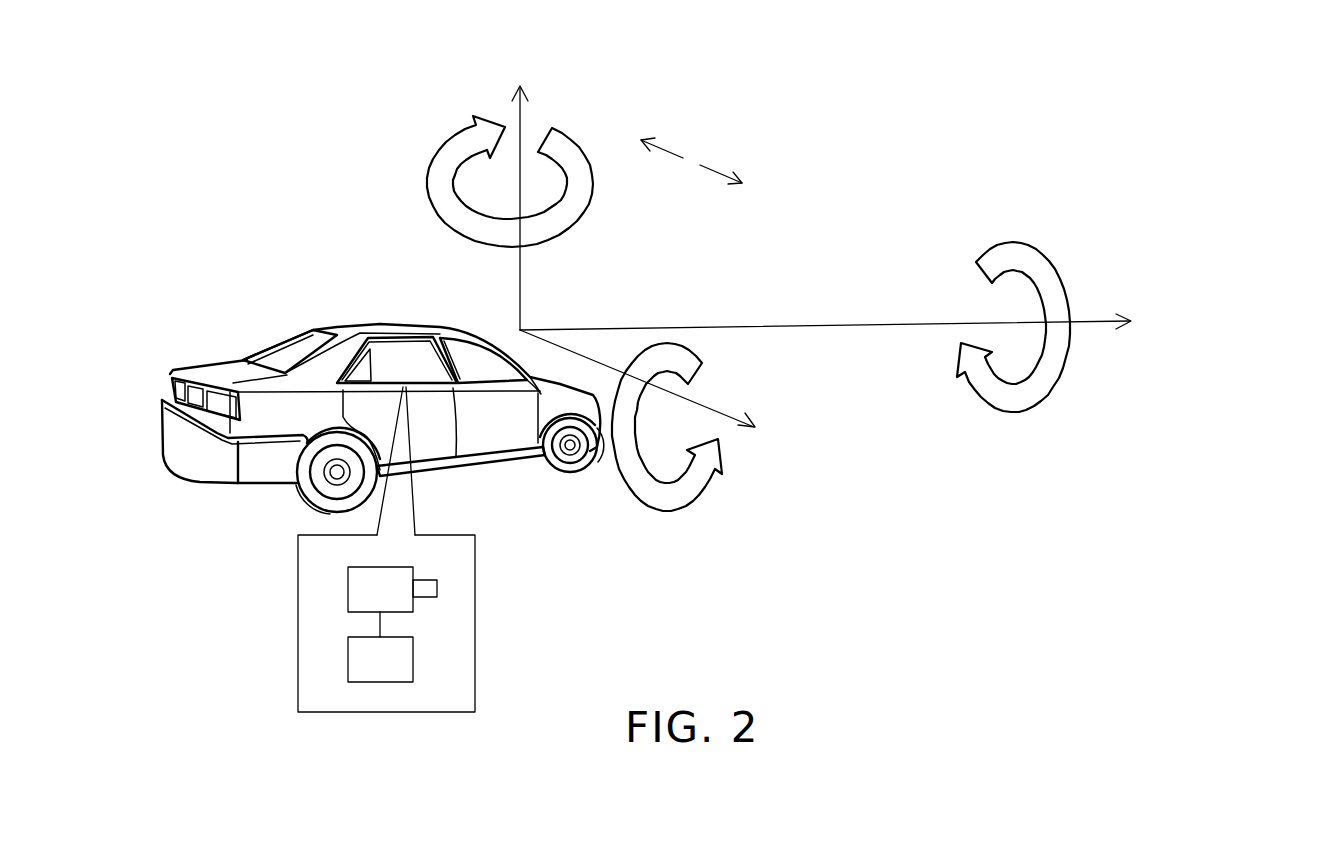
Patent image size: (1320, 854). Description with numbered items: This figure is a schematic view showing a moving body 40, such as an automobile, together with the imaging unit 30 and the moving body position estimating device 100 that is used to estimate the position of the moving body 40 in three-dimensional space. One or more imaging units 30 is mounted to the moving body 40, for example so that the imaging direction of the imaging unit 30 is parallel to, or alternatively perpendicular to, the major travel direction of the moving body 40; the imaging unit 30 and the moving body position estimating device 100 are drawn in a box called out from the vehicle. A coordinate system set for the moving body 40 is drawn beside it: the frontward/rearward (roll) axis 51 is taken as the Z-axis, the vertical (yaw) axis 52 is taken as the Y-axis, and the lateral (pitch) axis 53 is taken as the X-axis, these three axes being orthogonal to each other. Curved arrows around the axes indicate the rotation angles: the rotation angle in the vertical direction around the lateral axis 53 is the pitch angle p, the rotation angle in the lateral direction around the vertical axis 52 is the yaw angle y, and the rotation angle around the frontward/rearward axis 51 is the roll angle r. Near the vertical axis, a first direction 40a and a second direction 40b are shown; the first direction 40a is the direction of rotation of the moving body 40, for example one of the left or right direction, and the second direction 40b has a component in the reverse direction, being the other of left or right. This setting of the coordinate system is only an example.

The moving body 40 is at (232, 335).
The first direction 40a is at (667, 150).
The second direction 40b is at (712, 165).
The imaging unit 30 is at (348, 590).
The moving body position estimating device 100 is at (348, 658).
The frontward/rearward (roll) axis 51 is at (780, 327).
The vertical (yaw) axis 52 is at (523, 112).
The lateral (pitch) axis 53 is at (735, 410).
The yaw angle y is at (428, 180).
The pitch angle p is at (715, 490).
The roll angle r is at (1055, 265).